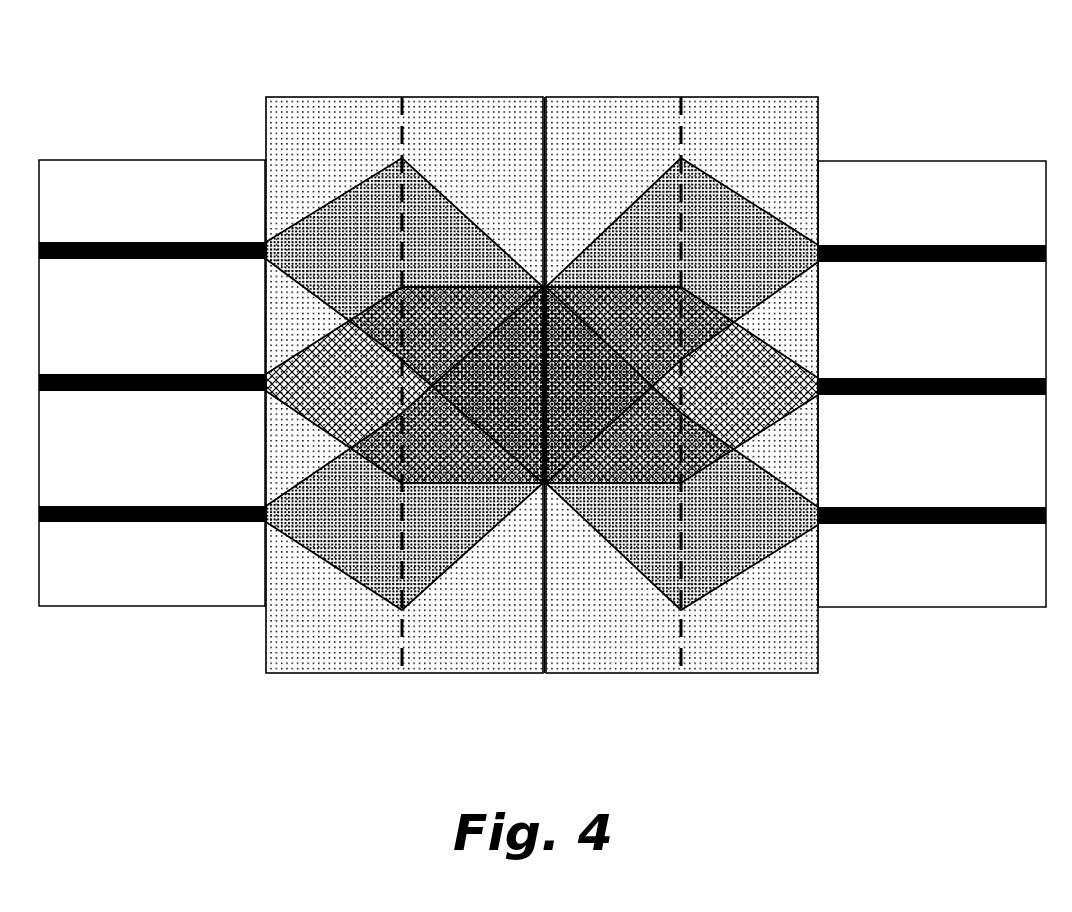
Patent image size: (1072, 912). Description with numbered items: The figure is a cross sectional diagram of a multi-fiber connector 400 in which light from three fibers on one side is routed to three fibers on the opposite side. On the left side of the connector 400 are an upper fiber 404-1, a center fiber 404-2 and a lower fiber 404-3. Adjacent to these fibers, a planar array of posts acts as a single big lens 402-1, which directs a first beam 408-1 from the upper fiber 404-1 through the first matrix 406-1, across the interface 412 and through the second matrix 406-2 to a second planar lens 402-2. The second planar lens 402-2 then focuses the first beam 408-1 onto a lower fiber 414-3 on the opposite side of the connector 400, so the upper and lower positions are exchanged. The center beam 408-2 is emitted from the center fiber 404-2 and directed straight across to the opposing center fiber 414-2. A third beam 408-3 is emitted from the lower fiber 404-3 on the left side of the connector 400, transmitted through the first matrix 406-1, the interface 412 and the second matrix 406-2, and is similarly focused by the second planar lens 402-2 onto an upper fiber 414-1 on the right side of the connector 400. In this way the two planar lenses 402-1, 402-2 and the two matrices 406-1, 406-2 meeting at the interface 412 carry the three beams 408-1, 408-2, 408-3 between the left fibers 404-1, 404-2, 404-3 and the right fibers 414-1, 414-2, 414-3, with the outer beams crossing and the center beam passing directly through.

The multi-fiber connector 400 is at (103, 73).
The single big lens 402-1 is at (402, 675).
The second planar lens 402-2 is at (681, 675).
The upper fiber 404-1 is at (118, 228).
The center fiber 404-2 is at (118, 362).
The lower fiber 404-3 is at (118, 496).
The first matrix 406-1 is at (355, 648).
The second matrix 406-2 is at (785, 646).
The first beam 408-1 is at (542, 320).
The center beam 408-2 is at (542, 385).
The third beam 408-3 is at (542, 448).
The interface 412 is at (542, 675).
The upper fiber 414-1 is at (1022, 226).
The opposing center fiber 414-2 is at (1022, 360).
The lower fiber 414-3 is at (1022, 494).